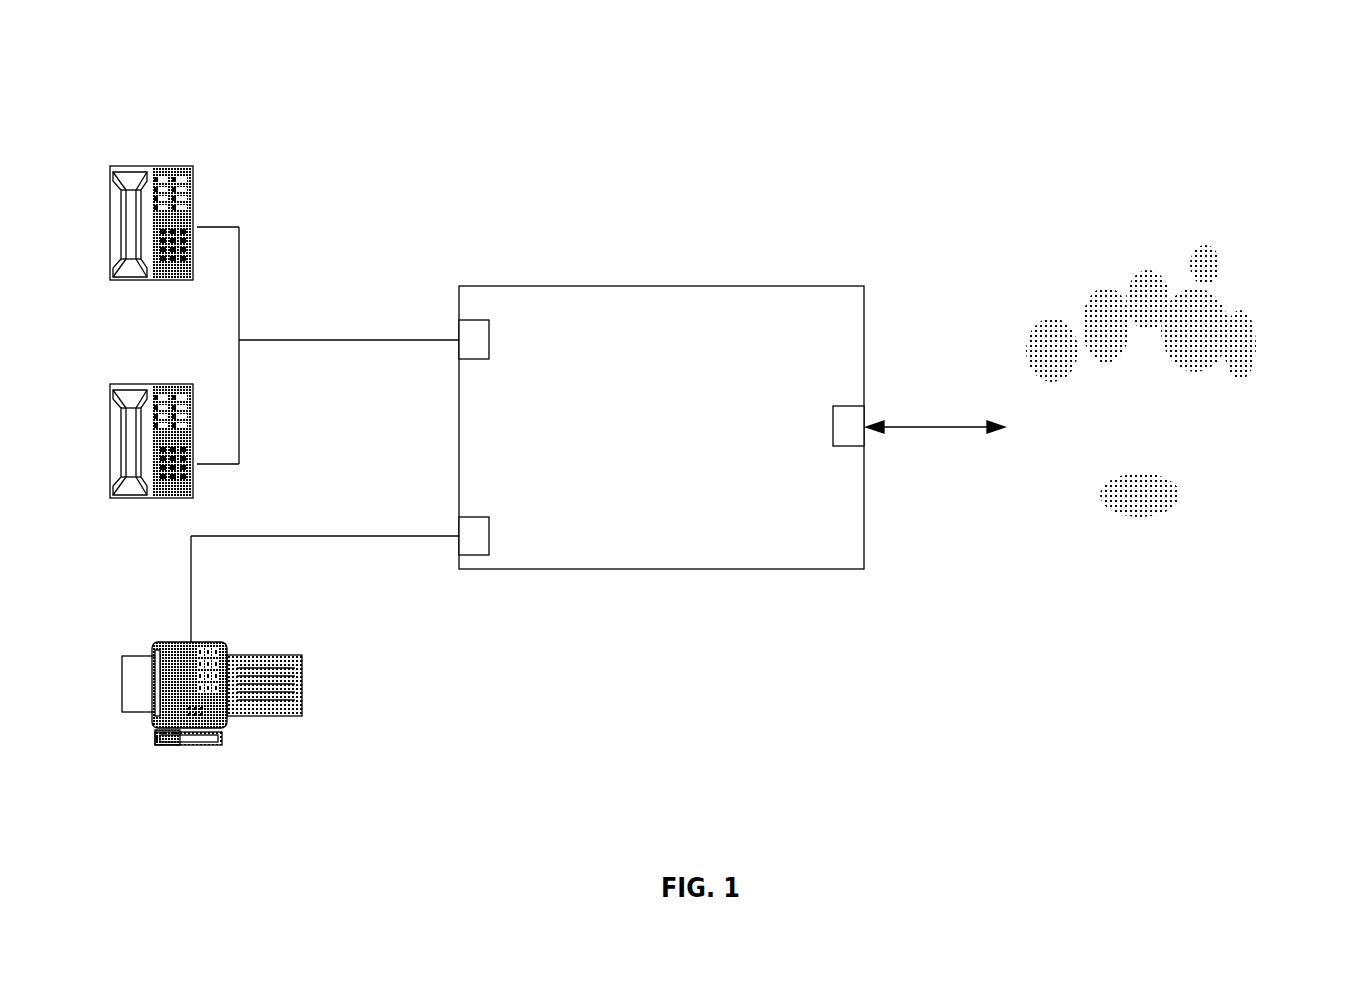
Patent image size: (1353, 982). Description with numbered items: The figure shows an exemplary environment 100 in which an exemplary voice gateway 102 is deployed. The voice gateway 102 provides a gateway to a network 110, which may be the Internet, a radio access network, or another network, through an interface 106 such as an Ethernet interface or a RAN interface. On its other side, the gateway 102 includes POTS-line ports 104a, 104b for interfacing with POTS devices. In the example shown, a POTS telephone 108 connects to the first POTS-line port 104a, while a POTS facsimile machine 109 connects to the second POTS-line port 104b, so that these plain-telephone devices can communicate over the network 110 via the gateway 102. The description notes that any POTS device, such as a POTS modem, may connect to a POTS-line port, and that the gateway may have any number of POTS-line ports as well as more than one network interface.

The environment 100 is at (410, 84).
The voice gateway 102 is at (661, 411).
The POTS-line port 104a is at (522, 334).
The POTS-line port 104b is at (522, 530).
The interface 106 is at (809, 413).
The POTS telephone 108 is at (187, 215).
The POTS facsimile machine 109 is at (212, 679).
The network 110 is at (1135, 364).